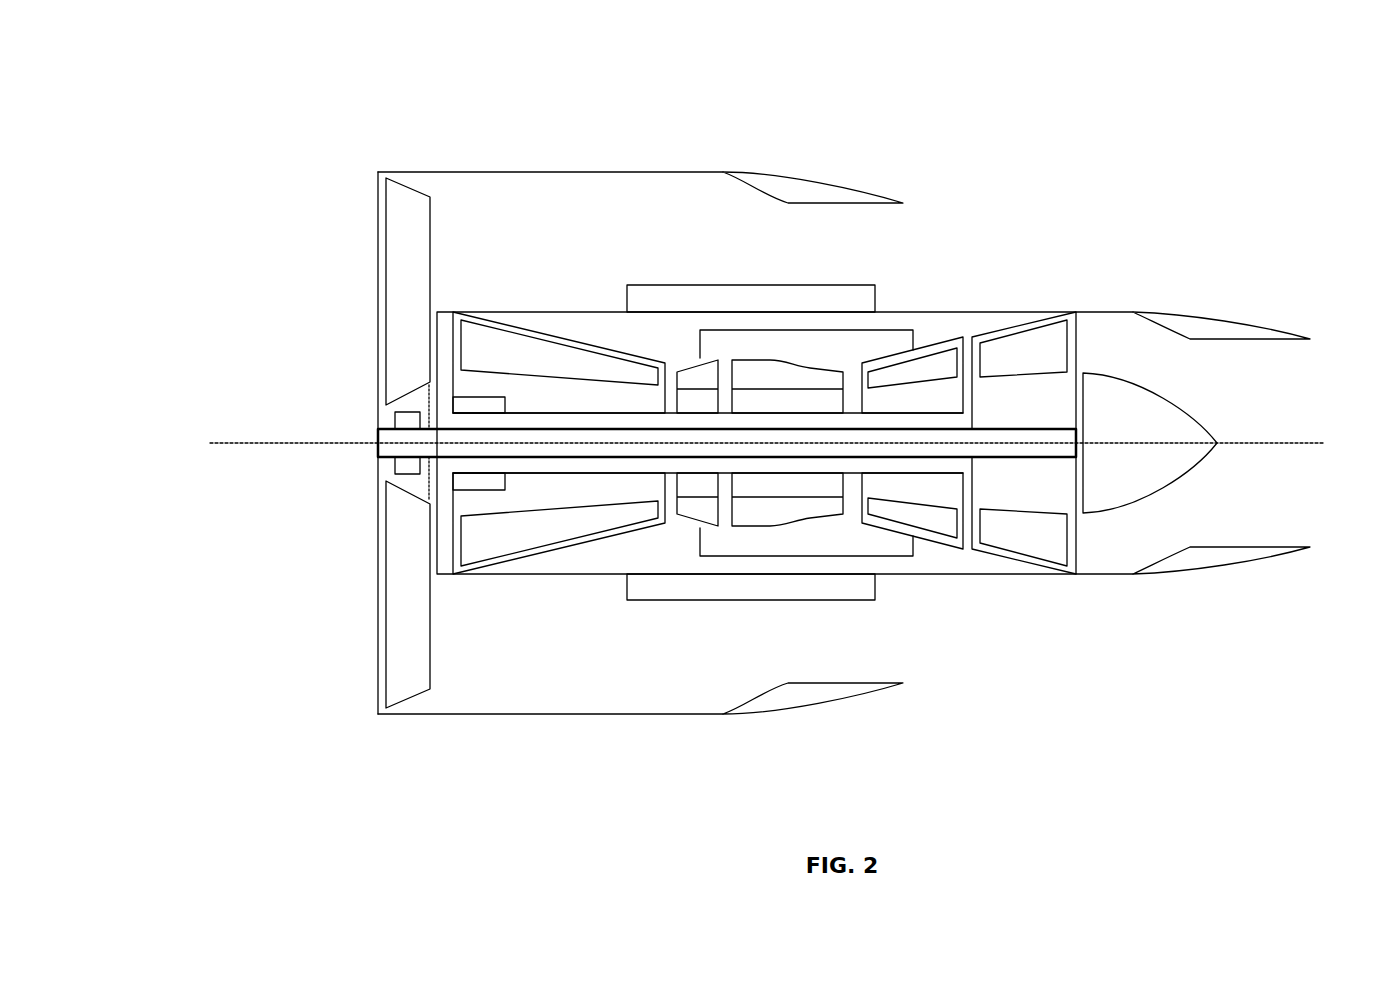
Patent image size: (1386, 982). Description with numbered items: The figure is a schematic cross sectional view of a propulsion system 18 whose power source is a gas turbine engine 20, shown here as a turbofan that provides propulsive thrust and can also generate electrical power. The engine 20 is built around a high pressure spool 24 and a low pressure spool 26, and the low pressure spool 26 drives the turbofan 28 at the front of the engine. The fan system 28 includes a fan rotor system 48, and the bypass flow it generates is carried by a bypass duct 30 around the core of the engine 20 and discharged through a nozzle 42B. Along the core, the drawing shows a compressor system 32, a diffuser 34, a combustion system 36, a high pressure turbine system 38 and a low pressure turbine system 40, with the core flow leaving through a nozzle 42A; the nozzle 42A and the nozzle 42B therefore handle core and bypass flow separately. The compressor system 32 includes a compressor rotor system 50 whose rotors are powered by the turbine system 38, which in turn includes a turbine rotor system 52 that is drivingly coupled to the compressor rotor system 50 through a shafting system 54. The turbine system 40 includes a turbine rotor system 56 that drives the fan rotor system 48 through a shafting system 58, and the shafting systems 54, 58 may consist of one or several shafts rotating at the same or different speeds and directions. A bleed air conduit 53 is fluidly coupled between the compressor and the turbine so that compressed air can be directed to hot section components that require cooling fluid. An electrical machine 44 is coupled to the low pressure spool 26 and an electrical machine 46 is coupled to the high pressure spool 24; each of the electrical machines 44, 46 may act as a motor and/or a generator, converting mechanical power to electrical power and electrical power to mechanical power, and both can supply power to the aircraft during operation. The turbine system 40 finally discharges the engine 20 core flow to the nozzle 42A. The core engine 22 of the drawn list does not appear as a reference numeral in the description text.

The propulsion system 18 is at (460, 110).
The gas turbine engine 20 is at (1200, 83).
The core engine 22 is at (700, 600).
The high pressure spool 24 is at (935, 253).
The low pressure spool 26 is at (1027, 222).
The turbofan 28 is at (377, 553).
The bypass duct 30 is at (542, 677).
The compressor system 32 is at (583, 547).
The diffuser 34 is at (695, 367).
The combustion system 36 is at (743, 359).
The high pressure turbine system 38 is at (893, 540).
The low pressure turbine system 40 is at (982, 552).
The nozzle 42A is at (1257, 565).
The nozzle 42B is at (797, 697).
The electrical machine 44 is at (393, 422).
The electrical machine 46 is at (490, 492).
The fan rotor system 48 is at (412, 693).
The compressor rotor system 50 is at (555, 345).
The turbine rotor system 52 is at (880, 367).
The bleed air conduit 53 is at (782, 329).
The shafting system 54 is at (853, 473).
The turbine rotor system 56 is at (997, 337).
The shafting system 58 is at (1000, 458).